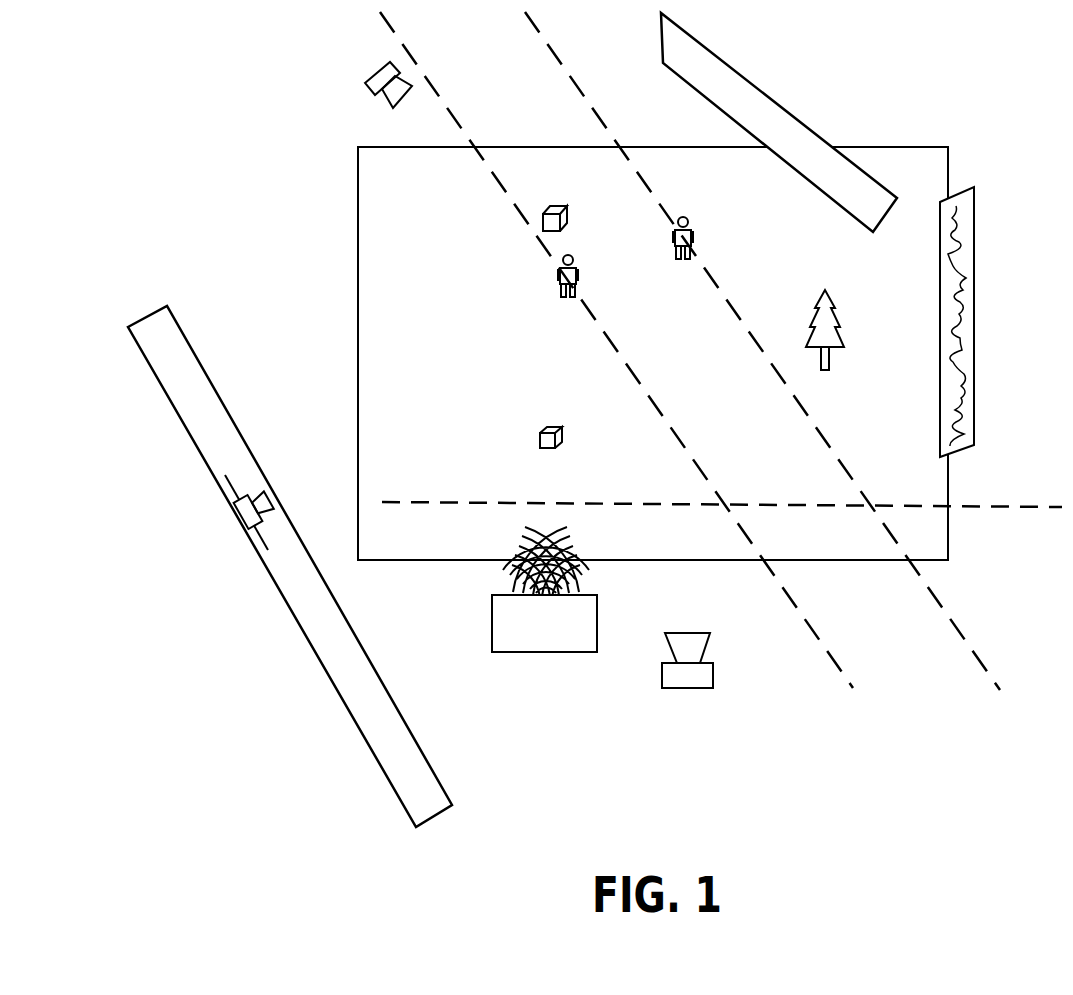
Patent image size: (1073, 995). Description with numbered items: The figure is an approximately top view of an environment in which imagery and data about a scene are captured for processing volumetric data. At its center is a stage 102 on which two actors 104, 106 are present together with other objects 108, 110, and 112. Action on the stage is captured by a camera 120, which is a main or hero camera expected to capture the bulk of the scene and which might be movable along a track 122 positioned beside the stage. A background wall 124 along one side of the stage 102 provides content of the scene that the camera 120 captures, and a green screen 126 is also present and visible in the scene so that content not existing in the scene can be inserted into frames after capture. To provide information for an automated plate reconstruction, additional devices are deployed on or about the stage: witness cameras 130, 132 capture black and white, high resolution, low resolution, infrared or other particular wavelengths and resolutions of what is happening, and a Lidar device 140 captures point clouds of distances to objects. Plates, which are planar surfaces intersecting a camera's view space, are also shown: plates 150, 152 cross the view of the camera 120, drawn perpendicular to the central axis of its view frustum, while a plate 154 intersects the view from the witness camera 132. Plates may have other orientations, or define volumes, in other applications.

The stage 102 is at (913, 146).
The actor 104 is at (580, 270).
The actor 106 is at (695, 232).
The object 108 is at (567, 211).
The object 110 is at (553, 428).
The object 112 is at (828, 290).
The camera 120 is at (277, 506).
The track 122 is at (450, 793).
The background wall 124 is at (975, 265).
The green screen 126 is at (792, 112).
The witness camera 130 is at (368, 76).
The witness camera 132 is at (713, 665).
The Lidar device 140 is at (597, 648).
The plate 150 is at (826, 650).
The plate 152 is at (958, 632).
The plate 154 is at (995, 507).